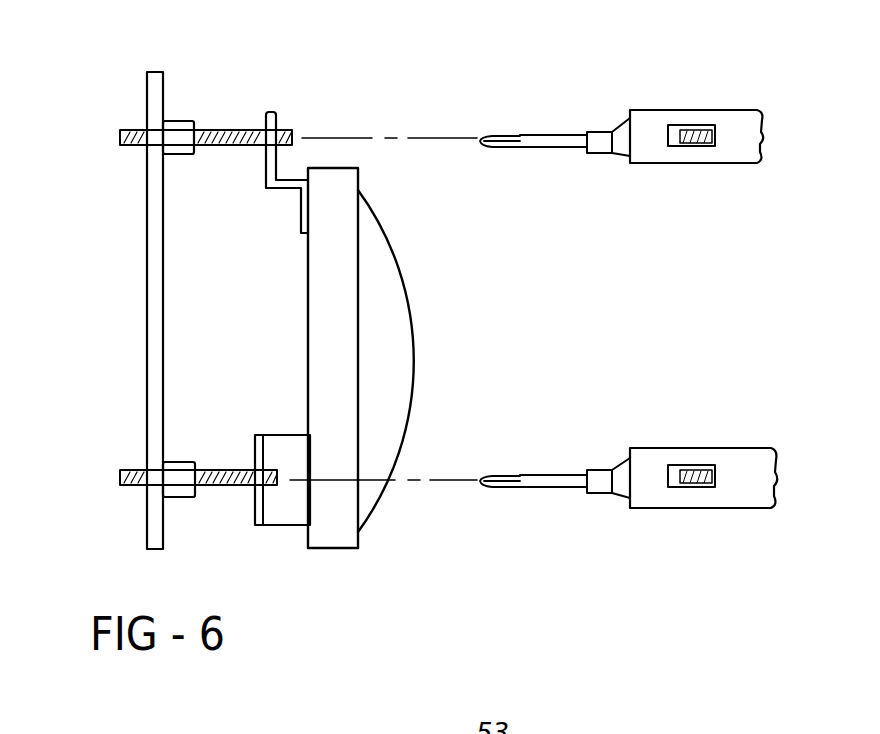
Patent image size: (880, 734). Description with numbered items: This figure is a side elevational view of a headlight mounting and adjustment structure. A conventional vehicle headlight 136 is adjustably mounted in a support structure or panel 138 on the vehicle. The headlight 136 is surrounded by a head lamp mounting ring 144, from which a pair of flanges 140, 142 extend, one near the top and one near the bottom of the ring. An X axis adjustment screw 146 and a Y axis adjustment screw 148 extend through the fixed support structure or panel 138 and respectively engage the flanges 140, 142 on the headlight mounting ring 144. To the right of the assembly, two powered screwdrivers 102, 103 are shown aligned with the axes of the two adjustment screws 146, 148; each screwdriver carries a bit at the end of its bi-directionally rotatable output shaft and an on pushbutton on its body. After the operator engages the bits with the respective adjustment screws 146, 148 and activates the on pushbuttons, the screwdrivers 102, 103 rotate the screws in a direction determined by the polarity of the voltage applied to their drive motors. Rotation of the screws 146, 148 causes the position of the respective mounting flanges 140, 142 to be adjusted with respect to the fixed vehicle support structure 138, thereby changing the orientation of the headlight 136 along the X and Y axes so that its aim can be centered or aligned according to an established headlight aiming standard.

The screwdriver 102 is at (618, 138).
The screwdriver 103 is at (623, 470).
The vehicle headlight 136 is at (416, 349).
The support structure or panel 138 is at (148, 357).
The flange 140 is at (267, 192).
The flange 142 is at (278, 510).
The head lamp mounting ring 144 is at (333, 537).
The X axis adjustment screw 146 is at (203, 128).
The Y axis adjustment screw 148 is at (217, 490).